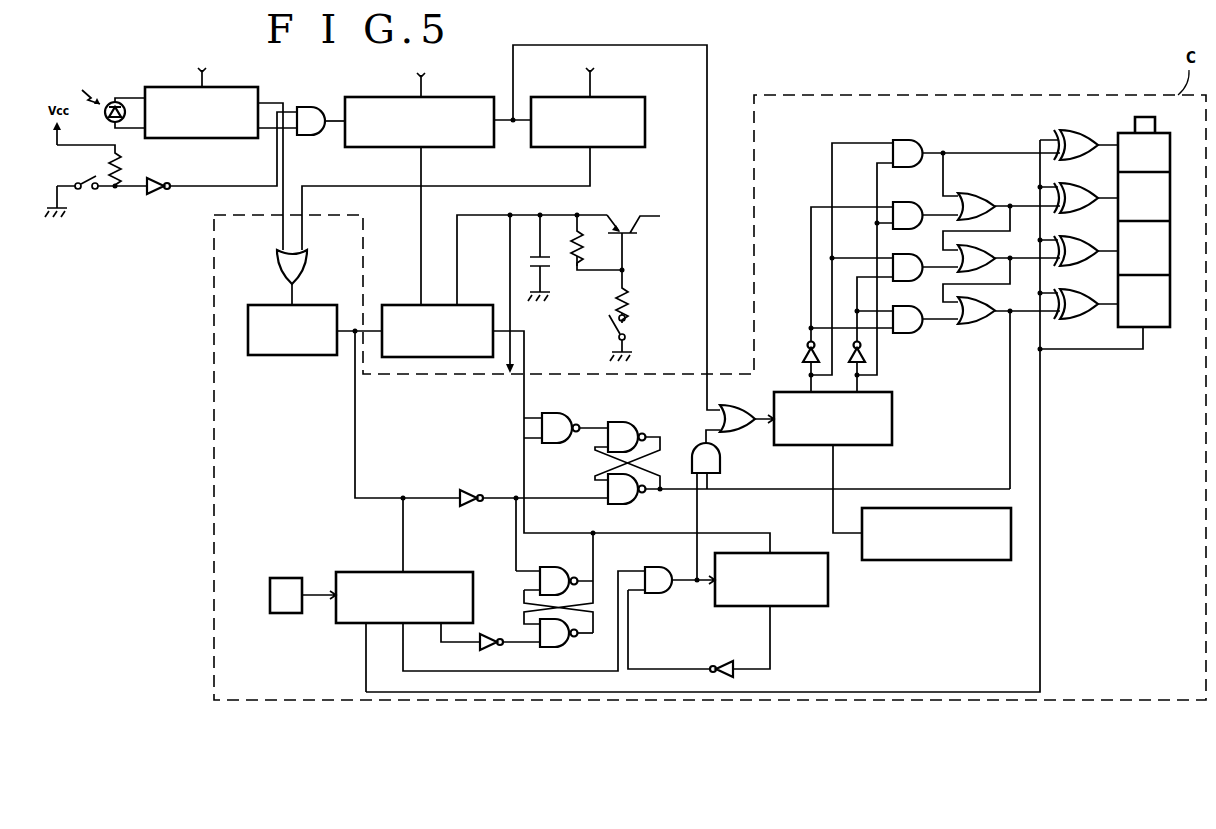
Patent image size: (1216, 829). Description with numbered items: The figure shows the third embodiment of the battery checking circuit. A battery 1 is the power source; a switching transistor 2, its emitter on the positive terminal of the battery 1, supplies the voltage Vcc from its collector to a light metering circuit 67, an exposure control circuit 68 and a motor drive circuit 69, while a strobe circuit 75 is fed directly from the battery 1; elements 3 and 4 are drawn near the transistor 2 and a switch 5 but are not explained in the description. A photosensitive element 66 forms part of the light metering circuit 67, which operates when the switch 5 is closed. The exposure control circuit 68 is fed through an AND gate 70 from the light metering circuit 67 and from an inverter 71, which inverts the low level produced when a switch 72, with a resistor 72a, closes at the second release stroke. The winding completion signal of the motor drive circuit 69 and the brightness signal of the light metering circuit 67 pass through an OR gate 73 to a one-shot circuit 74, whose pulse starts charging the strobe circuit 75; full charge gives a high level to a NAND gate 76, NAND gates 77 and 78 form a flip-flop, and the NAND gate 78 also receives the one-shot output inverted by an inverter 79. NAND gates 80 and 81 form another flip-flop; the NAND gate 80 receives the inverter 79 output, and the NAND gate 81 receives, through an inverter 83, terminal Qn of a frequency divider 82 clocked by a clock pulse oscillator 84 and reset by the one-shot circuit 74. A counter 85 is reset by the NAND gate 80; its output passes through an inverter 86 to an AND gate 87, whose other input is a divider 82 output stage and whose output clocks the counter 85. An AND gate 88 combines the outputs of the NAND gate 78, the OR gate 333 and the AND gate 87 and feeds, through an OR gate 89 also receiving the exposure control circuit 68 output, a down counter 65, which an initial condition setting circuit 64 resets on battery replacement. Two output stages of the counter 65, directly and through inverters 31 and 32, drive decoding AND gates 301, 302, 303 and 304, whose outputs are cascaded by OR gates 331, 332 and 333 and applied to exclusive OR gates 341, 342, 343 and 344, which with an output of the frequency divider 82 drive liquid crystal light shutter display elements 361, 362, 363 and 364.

The battery 1 is at (545, 256).
The switching transistor 2 is at (620, 224).
The resistor 3 is at (583, 244).
The resistor 4 is at (632, 298).
The switch 5 is at (630, 334).
The inverter 31 is at (801, 353).
The inverter 32 is at (852, 360).
The initial condition setting circuit 64 is at (876, 562).
The down counter 65 is at (893, 402).
The photosensitive element 66 is at (105, 119).
The light metering circuit 67 is at (242, 88).
The exposure control circuit 68 is at (477, 96).
The motor drive circuit 69 is at (631, 96).
The AND gate 70 is at (319, 106).
The inverter 71 is at (158, 196).
The switch 72 is at (87, 190).
The resistor 72a is at (123, 168).
The OR gate 73 is at (308, 266).
The one-shot circuit 74 is at (317, 305).
The strobe circuit 75 is at (469, 305).
The NAND gate 76 is at (565, 412).
The NAND gate 77 is at (637, 421).
The NAND gate 78 is at (635, 506).
The inverter 79 is at (472, 489).
The NAND gate 80 is at (569, 567).
The NAND gate 81 is at (571, 646).
The frequency divider 82 is at (455, 571).
The inverter 83 is at (491, 634).
The clock pulse oscillator 84 is at (296, 577).
The counter 85 is at (804, 553).
The inverter 86 is at (724, 658).
The AND gate 87 is at (665, 567).
The AND gate 88 is at (722, 464).
The OR gate 89 is at (748, 406).
The AND gate 301 is at (911, 140).
The AND gate 302 is at (911, 202).
The AND gate 303 is at (911, 254).
The AND gate 304 is at (911, 306).
The OR gate 331 is at (990, 194).
The OR gate 332 is at (994, 242).
The OR gate 333 is at (970, 326).
The exclusive OR gate 341 is at (1084, 131).
The exclusive OR gate 342 is at (1082, 186).
The exclusive OR gate 343 is at (1084, 238).
The exclusive OR gate 344 is at (1082, 290).
The liquid crystal light shutter display element 361 is at (1171, 154).
The liquid crystal light shutter display element 362 is at (1171, 197).
The liquid crystal light shutter display element 363 is at (1171, 248).
The liquid crystal light shutter display element 364 is at (1171, 300).